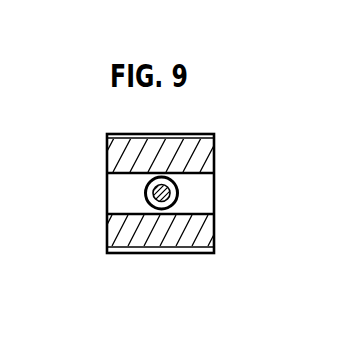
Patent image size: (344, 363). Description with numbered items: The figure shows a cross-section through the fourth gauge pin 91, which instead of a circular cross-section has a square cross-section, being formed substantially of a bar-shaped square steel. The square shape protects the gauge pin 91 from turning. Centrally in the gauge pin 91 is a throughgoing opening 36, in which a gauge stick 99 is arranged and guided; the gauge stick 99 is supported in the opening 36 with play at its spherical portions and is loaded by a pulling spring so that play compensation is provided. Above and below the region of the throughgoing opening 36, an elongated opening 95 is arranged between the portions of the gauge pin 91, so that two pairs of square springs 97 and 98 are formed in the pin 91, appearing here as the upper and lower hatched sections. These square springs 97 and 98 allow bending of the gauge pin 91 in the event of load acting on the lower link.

The fourth gauge pin 91 is at (107, 238).
The square springs 97 is at (214, 160).
The square springs 98 is at (214, 222).
The elongated opening 95 is at (201, 172).
The throughgoing opening 36 is at (153, 183).
The gauge stick 99 is at (152, 193).